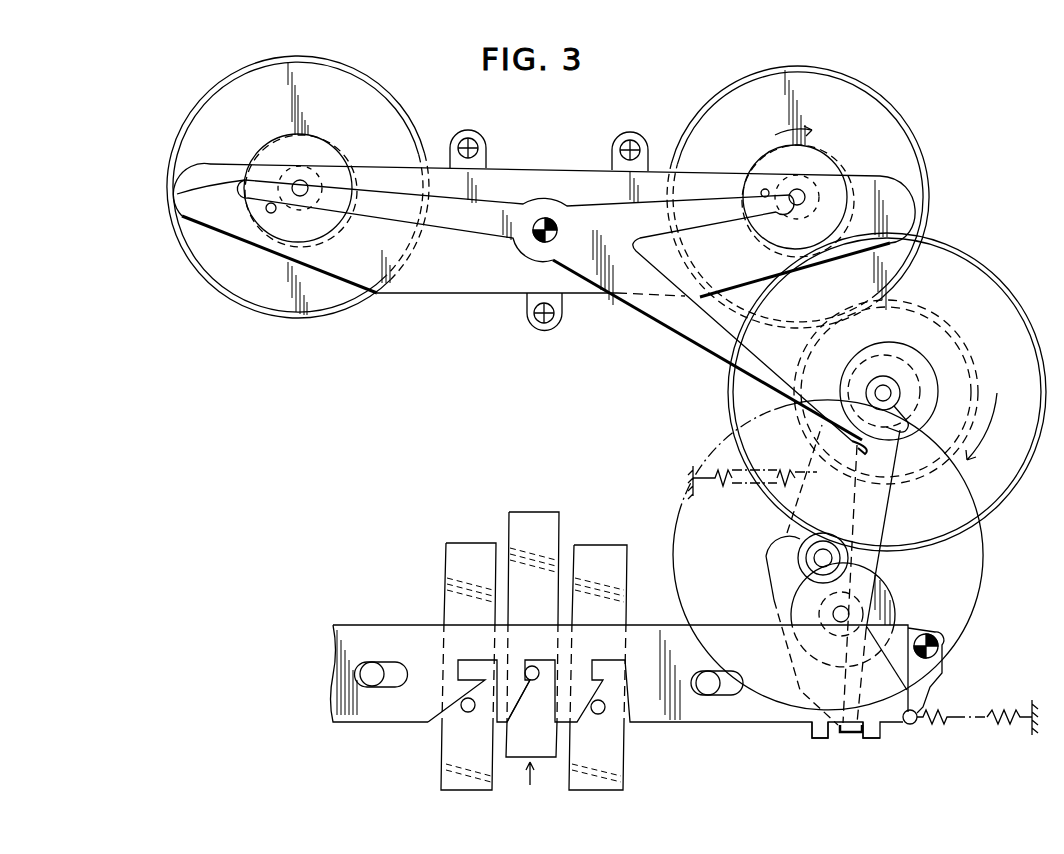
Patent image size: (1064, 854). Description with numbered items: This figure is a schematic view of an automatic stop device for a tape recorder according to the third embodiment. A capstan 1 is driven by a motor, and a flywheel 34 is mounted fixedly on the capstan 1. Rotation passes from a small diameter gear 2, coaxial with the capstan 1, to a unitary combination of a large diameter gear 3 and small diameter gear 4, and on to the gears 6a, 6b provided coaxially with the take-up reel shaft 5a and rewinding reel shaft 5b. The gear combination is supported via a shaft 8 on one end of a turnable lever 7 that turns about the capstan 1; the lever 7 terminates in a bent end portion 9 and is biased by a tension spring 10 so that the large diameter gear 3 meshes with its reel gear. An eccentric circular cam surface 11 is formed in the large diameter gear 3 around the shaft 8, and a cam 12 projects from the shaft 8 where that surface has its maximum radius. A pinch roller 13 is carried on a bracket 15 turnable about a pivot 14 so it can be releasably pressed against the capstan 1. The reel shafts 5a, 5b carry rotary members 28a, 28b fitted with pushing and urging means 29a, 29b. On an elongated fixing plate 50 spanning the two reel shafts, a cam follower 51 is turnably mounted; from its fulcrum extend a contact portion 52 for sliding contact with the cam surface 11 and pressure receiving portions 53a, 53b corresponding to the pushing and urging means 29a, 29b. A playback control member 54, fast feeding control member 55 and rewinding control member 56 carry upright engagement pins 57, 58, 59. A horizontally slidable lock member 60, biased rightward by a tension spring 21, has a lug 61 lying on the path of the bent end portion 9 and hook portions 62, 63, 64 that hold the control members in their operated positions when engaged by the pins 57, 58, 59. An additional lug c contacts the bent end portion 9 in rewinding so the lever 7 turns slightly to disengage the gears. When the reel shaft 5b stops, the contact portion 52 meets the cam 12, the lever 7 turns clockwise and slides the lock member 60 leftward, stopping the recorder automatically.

The capstan 1 is at (814, 552).
The small diameter gear 2 is at (858, 575).
The large diameter gear 3 is at (1005, 286).
The small diameter gear 4 is at (964, 336).
The take-up reel shaft 5a is at (827, 180).
The rewinding reel shaft 5b is at (288, 165).
The gear 6a is at (933, 160).
The gear 6b is at (188, 118).
The turnable lever 7 is at (770, 583).
The shaft 8 is at (878, 388).
The bent end portion 9 is at (860, 734).
The tension spring 10 is at (729, 482).
The eccentric circular cam surface 11 is at (936, 386).
The cam 12 is at (906, 440).
The pinch roller 13 is at (872, 585).
The pivot 14 is at (943, 647).
The bracket 15 is at (910, 626).
The tension spring 21 is at (998, 710).
The rotary member 28a is at (762, 165).
The rotary member 28b is at (344, 150).
The pushing and urging means 29a is at (760, 194).
The pushing and urging means 29b is at (266, 210).
The flywheel 34 is at (984, 573).
The fixing plate 50 is at (550, 168).
The cam follower 51 is at (482, 246).
The contact portion 52 is at (866, 450).
The pressure receiving portion 53a is at (729, 225).
The pressure receiving portion 53b is at (177, 194).
The playback control member 54 is at (539, 526).
The fast feeding control member 55 is at (604, 556).
The rewinding control member 56 is at (474, 546).
The engagement pin 57 is at (534, 666).
The engagement pin 58 is at (600, 714).
The engagement pin 59 is at (470, 712).
The lock member 60 is at (698, 725).
The lug 61 is at (818, 738).
The hook portion 62 is at (534, 682).
The hook portion 63 is at (604, 676).
The hook portion 64 is at (474, 676).
The lug c is at (884, 738).